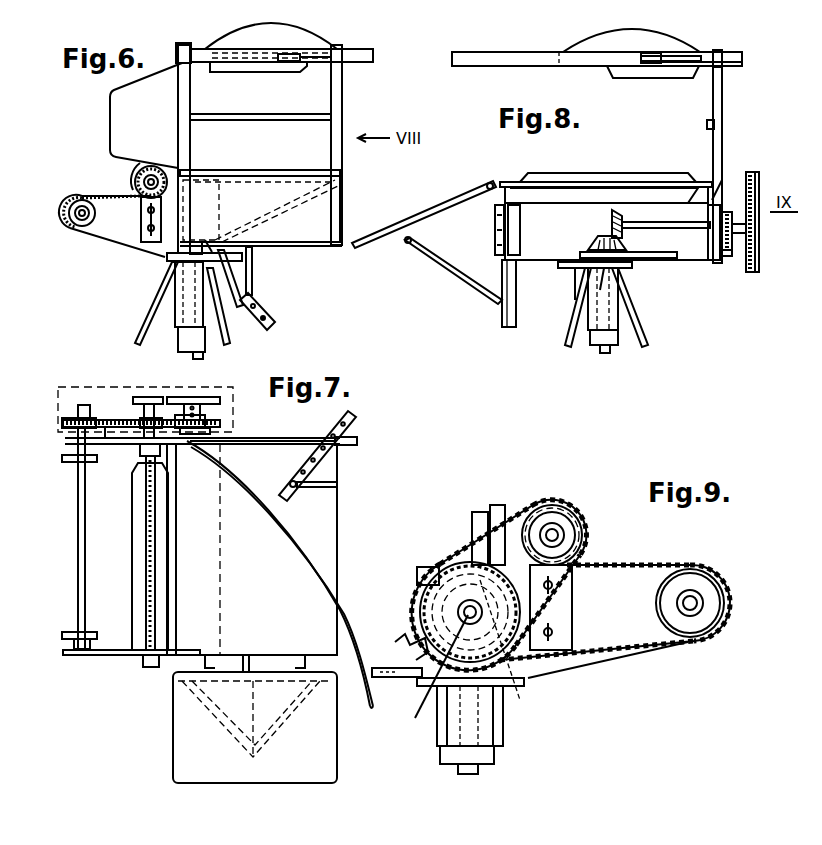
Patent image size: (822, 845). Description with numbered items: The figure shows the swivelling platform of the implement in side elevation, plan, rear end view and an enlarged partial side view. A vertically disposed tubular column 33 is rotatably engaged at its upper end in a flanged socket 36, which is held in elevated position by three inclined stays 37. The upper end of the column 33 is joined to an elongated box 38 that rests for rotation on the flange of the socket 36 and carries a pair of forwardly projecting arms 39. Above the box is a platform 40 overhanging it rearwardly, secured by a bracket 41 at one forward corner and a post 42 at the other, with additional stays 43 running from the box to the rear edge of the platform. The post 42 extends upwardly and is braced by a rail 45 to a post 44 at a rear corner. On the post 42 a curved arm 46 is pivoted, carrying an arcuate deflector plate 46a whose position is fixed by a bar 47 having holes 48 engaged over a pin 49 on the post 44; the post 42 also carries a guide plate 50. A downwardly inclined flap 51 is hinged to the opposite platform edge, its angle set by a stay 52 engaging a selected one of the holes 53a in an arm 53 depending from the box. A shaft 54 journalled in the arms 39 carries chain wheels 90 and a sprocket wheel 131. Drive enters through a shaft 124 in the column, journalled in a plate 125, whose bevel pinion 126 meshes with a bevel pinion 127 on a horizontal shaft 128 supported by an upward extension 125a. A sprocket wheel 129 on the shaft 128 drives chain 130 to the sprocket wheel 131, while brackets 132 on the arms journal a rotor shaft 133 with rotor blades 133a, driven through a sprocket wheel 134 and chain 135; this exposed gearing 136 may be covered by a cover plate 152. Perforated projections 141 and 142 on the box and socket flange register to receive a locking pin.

In FIG. 6, the rotatable column 33 is at (180, 345).
In FIG. 8, the rotatable column 33 is at (598, 347).
In FIG. 9, the rotatable column 33 is at (496, 758).
In FIG. 6, the flanged socket 36 is at (175, 306).
In FIG. 8, the flanged socket 36 is at (619, 317).
In FIG. 9, the flanged socket 36 is at (504, 728).
In FIG. 6, the inclined stays 37 is at (137, 342).
In FIG. 8, the inclined stays 37 is at (568, 342).
In FIG. 6, the elongated box 38 is at (168, 256).
In FIG. 8, the elongated box 38 is at (558, 265).
In FIG. 7, the elongated box 38 is at (222, 562).
In FIG. 9, the elongated box 38 is at (526, 680).
In FIG. 6, the forwardly projecting arms 39 is at (110, 240).
In FIG. 7, the forwardly projecting arms 39 is at (96, 452).
In FIG. 9, the forwardly projecting arms 39 is at (620, 662).
In FIG. 6, the platform 40 is at (282, 170).
In FIG. 8, the platform 40 is at (636, 182).
In FIG. 7, the platform 40 is at (338, 522).
In FIG. 6, the bracket 41 is at (205, 188).
In FIG. 8, the bracket 41 is at (512, 208).
In FIG. 9, the bracket 41 is at (472, 524).
In FIG. 6, the post 42 is at (191, 95).
In FIG. 8, the post 42 is at (724, 180).
In FIG. 7, the post 42 is at (240, 436).
In FIG. 9, the post 42 is at (500, 505).
In FIG. 6, the stays 43 is at (275, 212).
In FIG. 9, the stays 43 is at (400, 640).
In FIG. 6, the post 44 is at (343, 98).
In FIG. 8, the post 44 is at (723, 105).
In FIG. 7, the post 44 is at (335, 432).
In FIG. 6, the rail 45 is at (298, 120).
In FIG. 8, the rail 45 is at (709, 126).
In FIG. 7, the rail 45 is at (276, 445).
In FIG. 6, the curved arm 46 is at (202, 52).
In FIG. 8, the curved arm 46 is at (493, 67).
In FIG. 7, the curved arm 46 is at (356, 612).
In FIG. 6, the deflector plate 46a is at (262, 72).
In FIG. 8, the deflector plate 46a is at (578, 48).
In FIG. 7, the deflector plate 46a is at (320, 575).
In FIG. 6, the bar 47 is at (316, 70).
In FIG. 8, the bar 47 is at (682, 78).
In FIG. 7, the bar 47 is at (338, 485).
In FIG. 7, the holes 48 is at (330, 458).
In FIG. 8, the pin 49 is at (723, 56).
In FIG. 7, the pin 49 is at (358, 441).
In FIG. 6, the guide plate 50 is at (110, 118).
In FIG. 7, the guide plate 50 is at (110, 425).
In FIG. 6, the downwardly inclined flap 51 is at (332, 247).
In FIG. 8, the downwardly inclined flap 51 is at (424, 213).
In FIG. 7, the downwardly inclined flap 51 is at (280, 784).
In FIG. 6, the stay 52 is at (253, 266).
In FIG. 8, the stay 52 is at (436, 264).
In FIG. 7, the stay 52 is at (240, 695).
In FIG. 6, the arm 53 is at (240, 300).
In FIG. 8, the arm 53 is at (510, 330).
In FIG. 6, the holes 53a is at (272, 320).
In FIG. 6, the shaft 54 is at (78, 220).
In FIG. 7, the shaft 54 is at (78, 566).
In FIG. 9, the shaft 54 is at (691, 596).
In FIG. 6, the chain wheels 90 is at (69, 216).
In FIG. 7, the chain wheels 90 is at (70, 462).
In FIG. 6, the shaft 124 is at (203, 356).
In FIG. 8, the shaft 124 is at (607, 354).
In FIG. 9, the shaft 124 is at (470, 776).
In FIG. 8, the plate 125 is at (668, 259).
In FIG. 8, the upward extension of the plate 125a is at (628, 200).
In FIG. 8, the bevel pinion 126 is at (594, 238).
In FIG. 9, the bevel pinion 126 is at (520, 694).
In FIG. 8, the bevel pinion 127 is at (612, 214).
In FIG. 9, the bevel pinion 127 is at (414, 608).
In FIG. 8, the horizontally disposed shaft 128 is at (680, 229).
In FIG. 7, the horizontally disposed shaft 128 is at (194, 397).
In FIG. 9, the horizontally disposed shaft 128 is at (430, 673).
In FIG. 8, the sprocket wheel 129 is at (728, 257).
In FIG. 7, the sprocket wheel 129 is at (205, 428).
In FIG. 9, the sprocket wheel 129 is at (417, 572).
In FIG. 6, the drive chain 130 is at (112, 196).
In FIG. 7, the drive chain 130 is at (122, 420).
In FIG. 9, the drive chain 130 is at (655, 562).
In FIG. 7, the sprocket wheel 131 is at (62, 420).
In FIG. 9, the sprocket wheel 131 is at (700, 636).
In FIG. 6, the upwardly directed brackets 132 is at (141, 217).
In FIG. 8, the upwardly directed brackets 132 is at (497, 250).
In FIG. 7, the upwardly directed brackets 132 is at (142, 450).
In FIG. 9, the upwardly directed brackets 132 is at (574, 606).
In FIG. 6, the rotor shaft 133 is at (156, 166).
In FIG. 8, the rotor shaft 133 is at (752, 172).
In FIG. 7, the rotor shaft 133 is at (152, 418).
In FIG. 9, the rotor shaft 133 is at (562, 527).
In FIG. 6, the rotor blades 133a is at (140, 165).
In FIG. 8, the rotor blades 133a is at (562, 173).
In FIG. 7, the rotor blades 133a is at (136, 550).
In FIG. 8, the sprocket wheel 134 is at (759, 178).
In FIG. 7, the sprocket wheel 134 is at (150, 397).
In FIG. 9, the sprocket wheel 134 is at (555, 505).
In FIG. 9, the endless driving chain 135 is at (515, 512).
In FIG. 8, the exposed gearing 136 is at (733, 250).
In FIG. 7, the exposed gearing 136 is at (208, 416).
In FIG. 9, the exposed gearing 136 is at (440, 560).
In FIG. 6, the projection 141 is at (214, 244).
In FIG. 8, the projection 141 is at (612, 276).
In FIG. 9, the projection 141 is at (396, 678).
In FIG. 6, the projection 142 is at (197, 243).
In FIG. 8, the projection 142 is at (574, 278).
In FIG. 7, the cover plate 152 is at (62, 388).